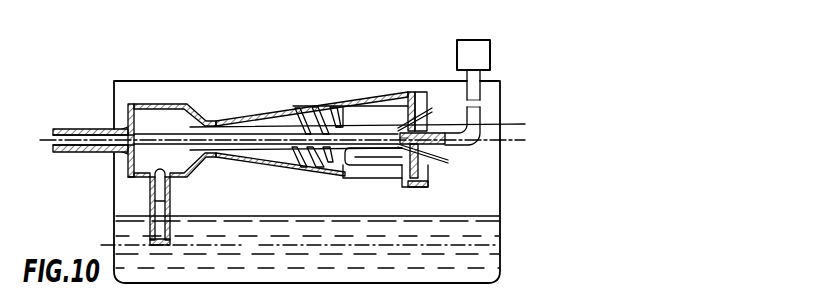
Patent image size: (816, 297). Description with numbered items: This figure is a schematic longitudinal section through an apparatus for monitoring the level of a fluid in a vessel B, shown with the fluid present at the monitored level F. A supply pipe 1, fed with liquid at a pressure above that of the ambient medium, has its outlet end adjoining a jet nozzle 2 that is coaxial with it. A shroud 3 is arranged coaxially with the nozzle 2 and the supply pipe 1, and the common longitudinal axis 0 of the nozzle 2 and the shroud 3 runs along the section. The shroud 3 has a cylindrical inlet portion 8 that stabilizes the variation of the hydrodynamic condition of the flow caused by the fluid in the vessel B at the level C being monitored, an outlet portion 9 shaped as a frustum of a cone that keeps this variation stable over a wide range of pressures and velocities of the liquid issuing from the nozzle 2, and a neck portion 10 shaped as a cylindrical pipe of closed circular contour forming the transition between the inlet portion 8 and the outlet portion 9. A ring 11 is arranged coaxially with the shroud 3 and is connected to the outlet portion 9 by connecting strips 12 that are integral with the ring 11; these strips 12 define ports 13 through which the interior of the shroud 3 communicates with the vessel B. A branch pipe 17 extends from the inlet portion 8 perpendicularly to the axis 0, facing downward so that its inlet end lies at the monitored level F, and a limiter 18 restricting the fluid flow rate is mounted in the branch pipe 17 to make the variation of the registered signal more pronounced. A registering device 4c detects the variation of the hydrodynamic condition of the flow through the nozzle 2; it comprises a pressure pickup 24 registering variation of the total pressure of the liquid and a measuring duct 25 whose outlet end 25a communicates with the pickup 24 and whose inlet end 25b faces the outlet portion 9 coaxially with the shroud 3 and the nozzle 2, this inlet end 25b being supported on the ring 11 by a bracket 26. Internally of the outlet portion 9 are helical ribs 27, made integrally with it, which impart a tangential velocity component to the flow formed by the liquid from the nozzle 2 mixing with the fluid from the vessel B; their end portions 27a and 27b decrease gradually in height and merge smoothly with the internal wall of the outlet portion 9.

The supply pipe 1 is at (80, 128).
The jet nozzle 2 is at (130, 128).
The shroud 3 is at (126, 180).
The inlet portion 8 is at (170, 104).
The outlet portion 9 is at (258, 118).
The neck portion 10 is at (216, 121).
The ring 11 is at (403, 185).
The connecting strips 12 is at (357, 166).
The ports 13 is at (388, 150).
The branch pipe 17 is at (152, 190).
The limiter 18 is at (177, 226).
The pressure pickup 24 is at (457, 64).
The measuring duct 25 is at (461, 133).
The outlet end 25a is at (481, 93).
The inlet end 25b is at (436, 146).
The bracket 26 is at (409, 92).
The ribs 27 is at (298, 108).
The end portion 27a is at (295, 170).
The end portion 27b is at (333, 107).
The registering device 4c is at (494, 61).
The vessel B is at (505, 240).
The level C— C is at (365, 122).
The longitudinal axis O—O 0 is at (284, 142).
The monitored level F— F is at (292, 242).